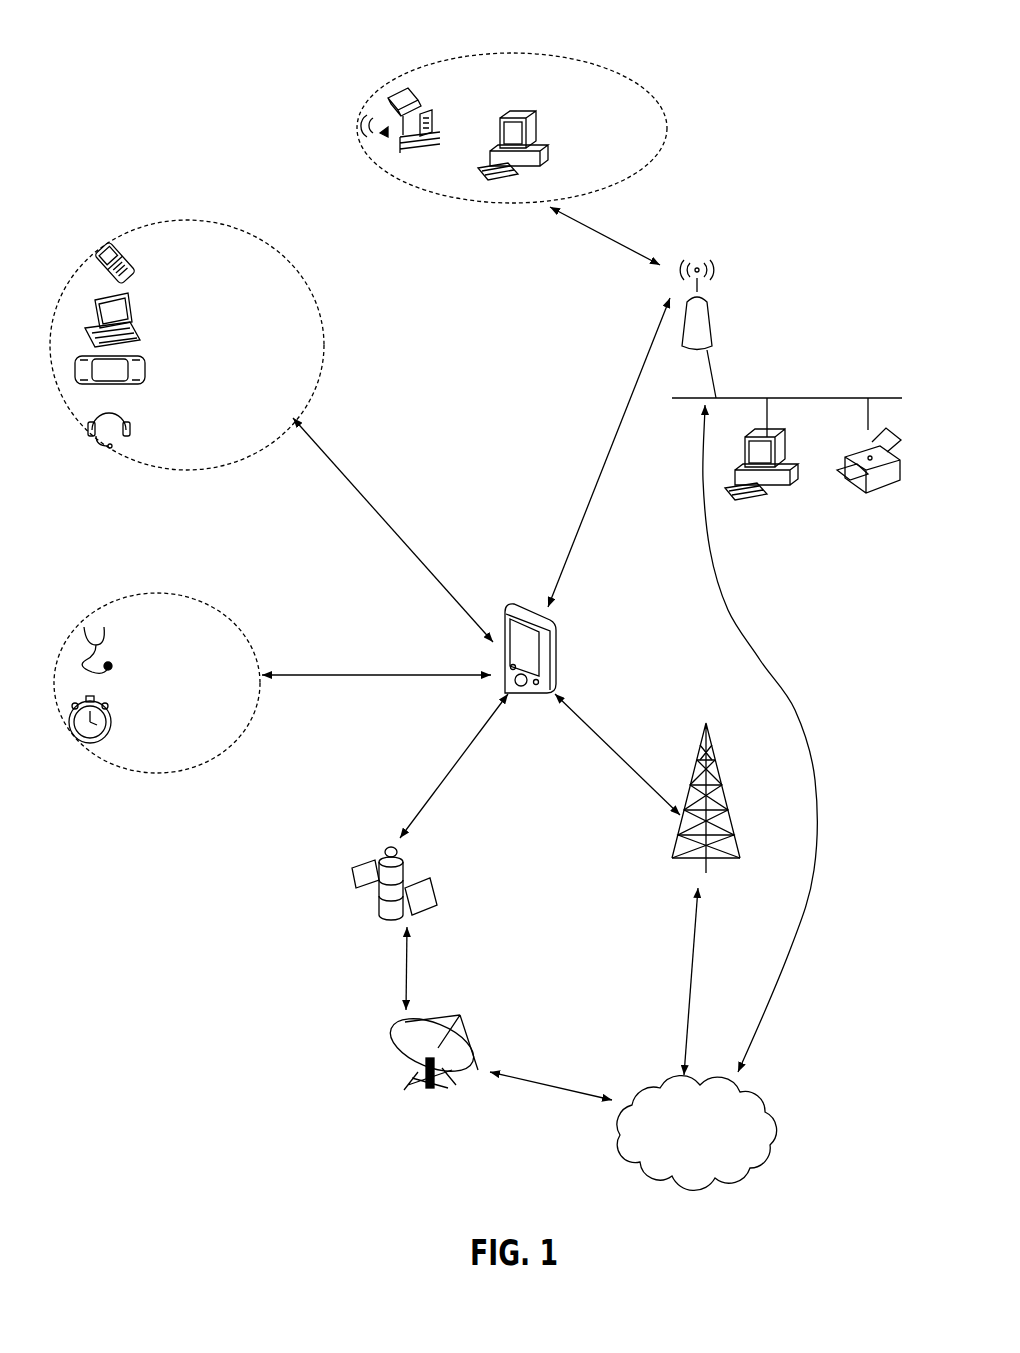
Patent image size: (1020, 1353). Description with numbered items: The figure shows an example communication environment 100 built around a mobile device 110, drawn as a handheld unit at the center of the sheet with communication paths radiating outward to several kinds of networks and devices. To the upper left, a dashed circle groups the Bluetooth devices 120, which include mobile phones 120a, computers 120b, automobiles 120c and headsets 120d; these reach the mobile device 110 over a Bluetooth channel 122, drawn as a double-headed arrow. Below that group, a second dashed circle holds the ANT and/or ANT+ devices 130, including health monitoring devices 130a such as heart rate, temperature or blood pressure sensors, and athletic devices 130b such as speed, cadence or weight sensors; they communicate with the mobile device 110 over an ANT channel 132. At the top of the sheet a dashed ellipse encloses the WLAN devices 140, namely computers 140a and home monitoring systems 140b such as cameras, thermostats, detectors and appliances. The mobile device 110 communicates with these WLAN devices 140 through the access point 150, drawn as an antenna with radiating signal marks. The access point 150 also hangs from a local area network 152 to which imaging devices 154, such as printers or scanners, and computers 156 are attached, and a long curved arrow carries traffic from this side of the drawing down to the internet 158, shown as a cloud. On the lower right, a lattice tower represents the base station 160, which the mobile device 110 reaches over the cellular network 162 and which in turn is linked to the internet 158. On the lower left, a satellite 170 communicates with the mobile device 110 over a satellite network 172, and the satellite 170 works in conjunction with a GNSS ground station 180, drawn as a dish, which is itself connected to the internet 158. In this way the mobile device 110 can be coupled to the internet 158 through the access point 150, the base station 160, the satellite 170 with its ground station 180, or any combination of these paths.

The communication environment 100 is at (848, 103).
The mobile device 110 is at (525, 632).
The Bluetooth devices 120 is at (187, 310).
The mobile phones 120a is at (136, 258).
The computers 120b is at (137, 325).
The automobiles 120c is at (146, 370).
The headsets 120d is at (131, 418).
The Bluetooth channels 122 is at (393, 530).
The ANT and/or ANT+ devices 130 is at (157, 648).
The health monitoring devices 130a is at (118, 638).
The athletic devices 130b is at (124, 708).
The ANT channels 132 is at (376, 657).
The WLAN devices 140 is at (512, 105).
The computers 140a is at (548, 125).
The home monitoring systems 140b is at (428, 100).
The access point 150 is at (719, 329).
The LAN 152 is at (791, 385).
The imaging devices 154 is at (869, 461).
The computers 156 is at (761, 461).
The internet 158 is at (720, 1133).
The base stations 160 is at (717, 798).
The cellular communication networks 162 is at (619, 751).
The satellites 170 is at (382, 883).
The satellite network 172 is at (449, 766).
The GNSS ground stations 180 is at (432, 1063).